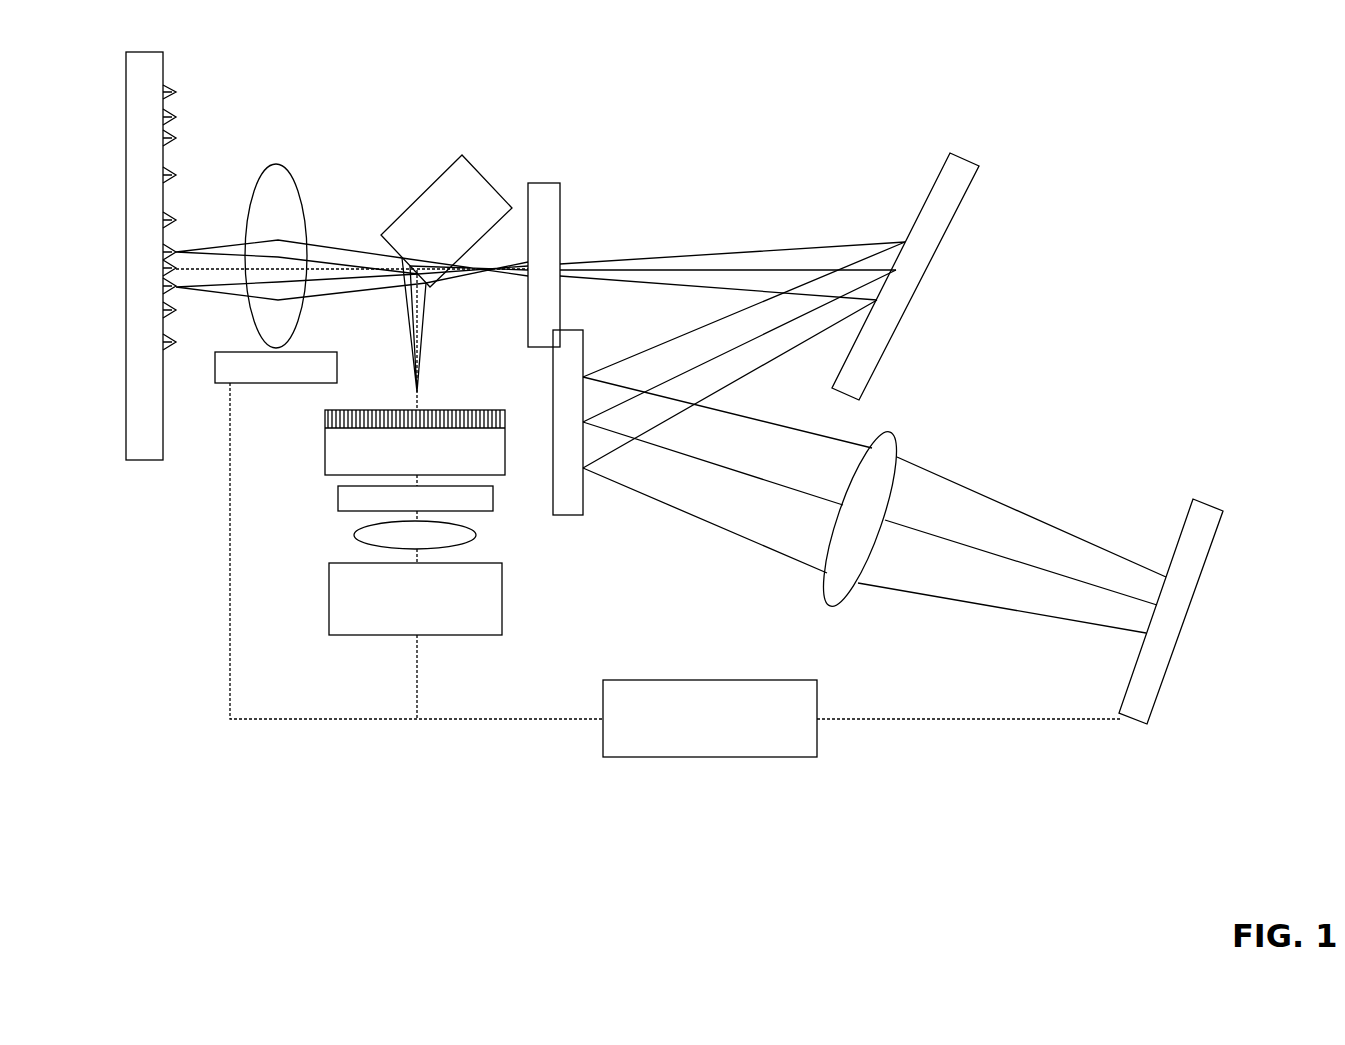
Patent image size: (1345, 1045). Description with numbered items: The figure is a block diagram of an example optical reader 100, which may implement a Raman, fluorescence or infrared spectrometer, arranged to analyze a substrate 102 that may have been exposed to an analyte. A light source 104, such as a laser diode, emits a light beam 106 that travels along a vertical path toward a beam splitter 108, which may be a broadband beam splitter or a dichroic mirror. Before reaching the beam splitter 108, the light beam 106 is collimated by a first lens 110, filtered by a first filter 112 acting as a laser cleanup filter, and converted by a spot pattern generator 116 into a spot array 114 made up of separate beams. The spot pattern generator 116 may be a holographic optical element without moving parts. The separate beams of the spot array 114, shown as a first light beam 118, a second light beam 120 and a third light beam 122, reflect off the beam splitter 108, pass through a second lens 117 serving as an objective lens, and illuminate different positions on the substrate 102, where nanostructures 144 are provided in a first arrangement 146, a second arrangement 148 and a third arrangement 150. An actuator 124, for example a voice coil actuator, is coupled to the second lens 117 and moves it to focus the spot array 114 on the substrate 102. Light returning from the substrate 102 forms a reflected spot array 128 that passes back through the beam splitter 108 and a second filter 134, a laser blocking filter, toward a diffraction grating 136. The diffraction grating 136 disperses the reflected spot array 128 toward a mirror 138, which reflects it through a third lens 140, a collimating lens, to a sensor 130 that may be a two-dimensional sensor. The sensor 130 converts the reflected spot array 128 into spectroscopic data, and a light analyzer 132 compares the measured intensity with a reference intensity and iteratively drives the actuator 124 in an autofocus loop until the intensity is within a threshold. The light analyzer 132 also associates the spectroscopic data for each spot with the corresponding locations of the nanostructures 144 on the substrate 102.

The optical reader 100 is at (698, 127).
The substrate 102 is at (160, 463).
The light source 104 is at (500, 603).
The light beam 106 is at (415, 560).
The beam splitter 108 is at (462, 155).
The first lens 110 is at (357, 537).
The first filter 112 is at (338, 498).
The spot array 114 is at (199, 191).
The spot pattern generator 116 is at (325, 452).
The second lens 117 is at (286, 167).
The first light beam 118 is at (238, 242).
The second light beam 120 is at (227, 270).
The third light beam 122 is at (246, 300).
The actuator 124 is at (305, 350).
The reflected spot array 128 is at (1083, 518).
The sensor 130 is at (1207, 503).
The light analyzer 132 is at (708, 680).
The second filter 134 is at (542, 183).
The diffraction grating 136 is at (965, 160).
The mirror 138 is at (567, 330).
The third lens 140 is at (895, 428).
The nanostructures 144 is at (172, 90).
The first arrangement 146 is at (177, 111).
The second arrangement 148 is at (179, 135).
The third arrangement 150 is at (177, 172).